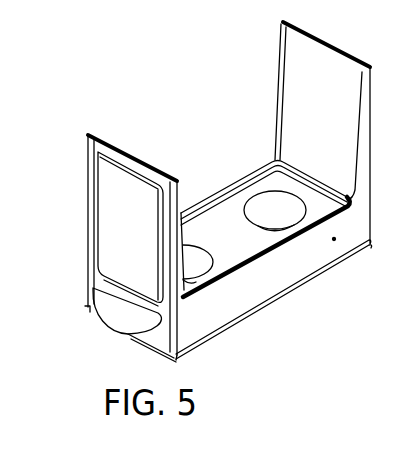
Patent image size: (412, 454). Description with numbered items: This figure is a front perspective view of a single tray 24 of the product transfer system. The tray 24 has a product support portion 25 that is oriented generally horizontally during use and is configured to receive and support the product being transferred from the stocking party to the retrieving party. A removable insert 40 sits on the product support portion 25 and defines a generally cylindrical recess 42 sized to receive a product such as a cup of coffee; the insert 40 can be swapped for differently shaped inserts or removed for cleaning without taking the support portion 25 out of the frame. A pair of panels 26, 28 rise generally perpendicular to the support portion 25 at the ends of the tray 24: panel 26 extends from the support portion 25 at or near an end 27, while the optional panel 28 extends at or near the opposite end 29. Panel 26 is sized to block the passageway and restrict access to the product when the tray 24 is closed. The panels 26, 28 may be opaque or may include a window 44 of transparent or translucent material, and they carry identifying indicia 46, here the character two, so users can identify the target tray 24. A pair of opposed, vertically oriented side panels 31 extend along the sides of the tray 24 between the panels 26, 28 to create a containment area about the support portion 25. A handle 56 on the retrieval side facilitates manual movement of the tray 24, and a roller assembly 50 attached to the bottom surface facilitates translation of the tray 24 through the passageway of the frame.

The tray 24 is at (111, 51).
The product support portion 25 is at (288, 282).
The panel 26 is at (90, 200).
The end 27 is at (188, 318).
The panel 28 is at (348, 52).
The end 29 is at (355, 218).
The side panel 31 is at (243, 177).
The removable insert 40 is at (222, 225).
The recess 42 is at (286, 210).
The window 44 is at (110, 182).
The identifying indicia 46 is at (138, 188).
The roller assembly 50 is at (338, 262).
The handle 56 is at (117, 324).